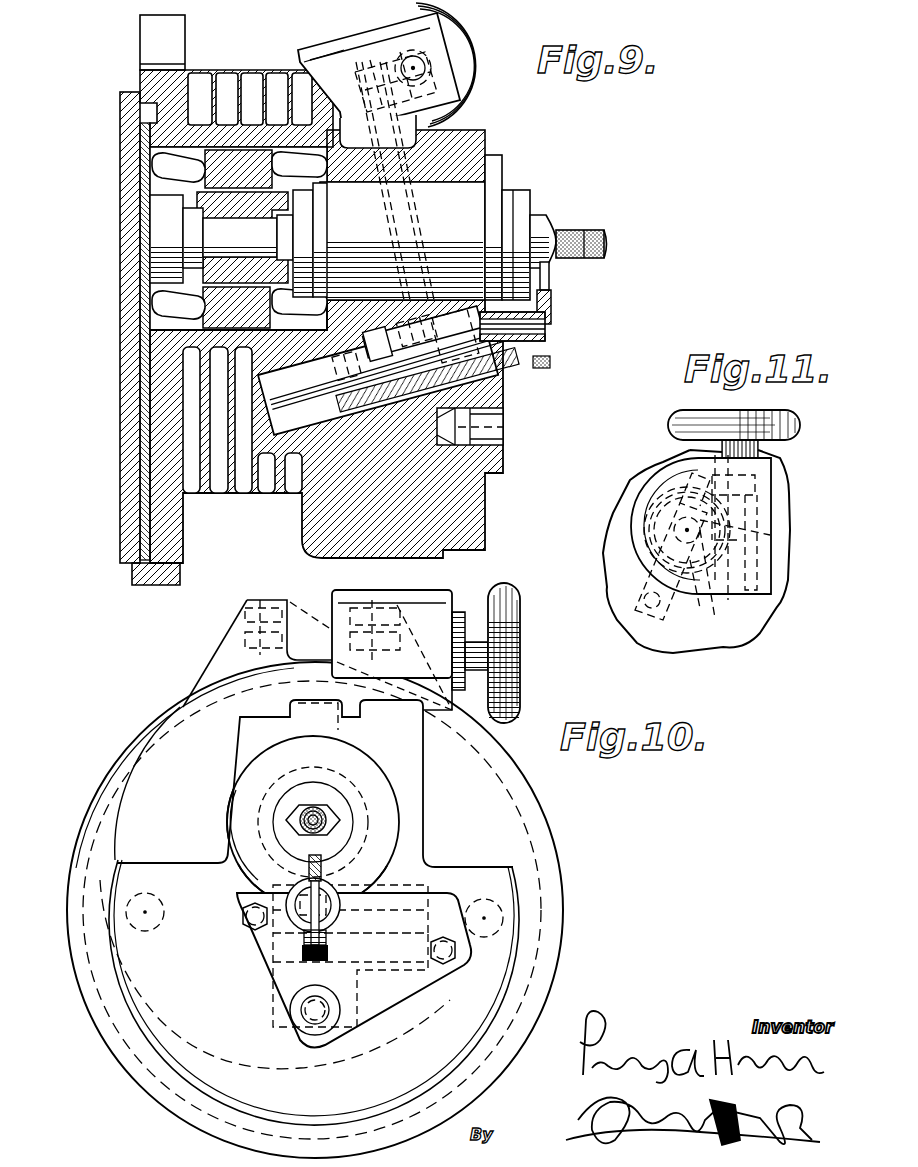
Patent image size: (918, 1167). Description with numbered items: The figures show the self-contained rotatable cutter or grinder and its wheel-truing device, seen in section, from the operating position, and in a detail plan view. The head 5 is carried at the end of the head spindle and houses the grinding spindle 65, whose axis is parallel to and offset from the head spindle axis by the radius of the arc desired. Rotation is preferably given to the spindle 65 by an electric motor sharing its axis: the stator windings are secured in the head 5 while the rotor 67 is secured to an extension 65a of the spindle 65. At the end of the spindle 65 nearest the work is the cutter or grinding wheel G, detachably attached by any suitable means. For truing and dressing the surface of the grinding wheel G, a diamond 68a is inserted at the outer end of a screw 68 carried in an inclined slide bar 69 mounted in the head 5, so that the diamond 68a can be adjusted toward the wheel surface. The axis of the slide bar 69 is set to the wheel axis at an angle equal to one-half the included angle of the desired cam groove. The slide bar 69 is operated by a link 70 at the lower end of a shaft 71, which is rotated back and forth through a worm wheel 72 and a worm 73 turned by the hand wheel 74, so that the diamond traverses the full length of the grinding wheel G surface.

In FIG. 9, the head 5 is at (468, 520).
In FIG. 10, the head 5 is at (156, 730).
In FIG. 9, the spindle 65 is at (551, 222).
In FIG. 10, the spindle 65 is at (293, 822).
In FIG. 9, the extension of spindle 65a is at (238, 240).
In FIG. 9, the rotor 67 is at (268, 201).
In FIG. 9, the screw 68 is at (552, 300).
In FIG. 10, the screw 68 is at (298, 880).
In FIG. 9, the diamond 68a is at (551, 272).
In FIG. 10, the diamond 68a is at (330, 850).
In FIG. 9, the inclined slide bar 69 is at (556, 338).
In FIG. 10, the inclined slide bar 69 is at (330, 902).
In FIG. 9, the link 70 is at (387, 364).
In FIG. 11, the link 70 is at (650, 588).
In FIG. 9, the shaft 71 is at (418, 220).
In FIG. 11, the shaft 71 is at (700, 604).
In FIG. 9, the worm wheel 72 is at (404, 66).
In FIG. 11, the worm wheel 72 is at (670, 525).
In FIG. 9, the worm 73 is at (428, 68).
In FIG. 11, the worm 73 is at (752, 530).
In FIG. 9, the hand wheel 74 is at (382, 14).
In FIG. 11, the hand wheel 74 is at (776, 412).
In FIG. 10, the hand wheel 74 is at (521, 640).
In FIG. 9, the grinding wheel G is at (602, 240).
In FIG. 10, the grinding wheel G is at (318, 812).